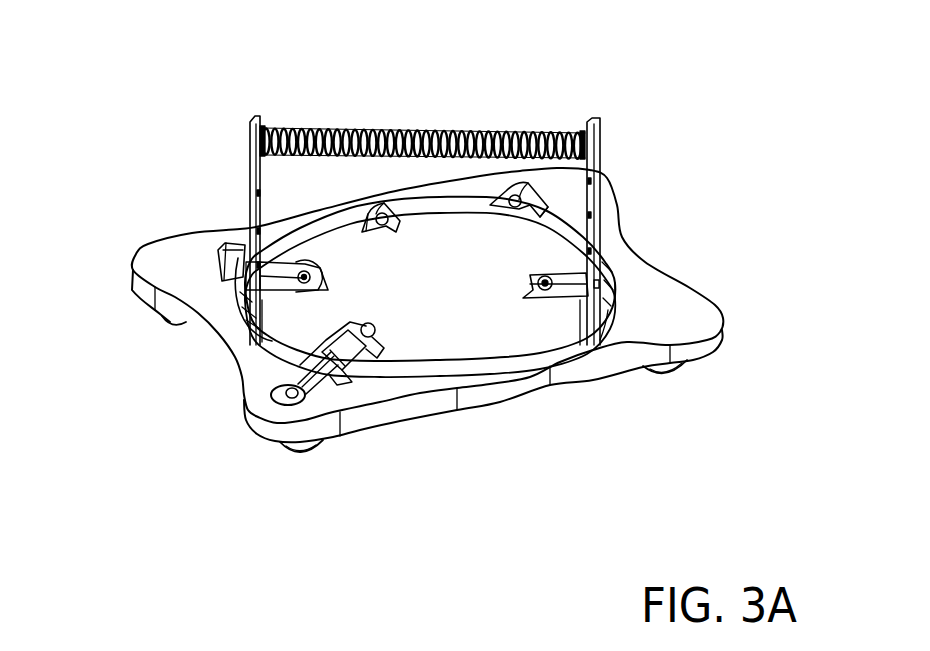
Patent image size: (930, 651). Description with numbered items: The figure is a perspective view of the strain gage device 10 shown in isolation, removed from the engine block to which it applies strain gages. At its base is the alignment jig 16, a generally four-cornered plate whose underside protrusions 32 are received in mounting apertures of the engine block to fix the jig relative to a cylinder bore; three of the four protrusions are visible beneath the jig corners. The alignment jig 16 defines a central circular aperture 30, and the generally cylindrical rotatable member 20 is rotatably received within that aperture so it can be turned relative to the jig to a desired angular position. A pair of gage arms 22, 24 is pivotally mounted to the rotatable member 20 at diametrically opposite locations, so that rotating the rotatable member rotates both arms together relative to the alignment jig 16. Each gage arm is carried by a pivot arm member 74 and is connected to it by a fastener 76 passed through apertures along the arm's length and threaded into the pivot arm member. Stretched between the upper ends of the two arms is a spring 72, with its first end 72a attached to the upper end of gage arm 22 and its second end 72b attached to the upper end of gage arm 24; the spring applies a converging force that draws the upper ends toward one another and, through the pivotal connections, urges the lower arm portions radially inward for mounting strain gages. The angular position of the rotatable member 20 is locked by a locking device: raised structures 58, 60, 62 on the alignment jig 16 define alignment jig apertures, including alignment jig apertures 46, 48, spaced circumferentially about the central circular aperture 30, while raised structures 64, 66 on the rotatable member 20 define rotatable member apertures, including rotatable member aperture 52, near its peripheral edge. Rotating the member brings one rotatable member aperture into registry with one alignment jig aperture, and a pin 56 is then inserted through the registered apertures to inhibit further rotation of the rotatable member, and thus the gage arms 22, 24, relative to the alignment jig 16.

The strain gage device 10 is at (172, 390).
The alignment jig 16 is at (672, 300).
The rotatable member 20 is at (490, 333).
The gage arm 22 is at (250, 178).
The gage arm 24 is at (600, 192).
The central circular aperture 30 is at (433, 377).
The underside protrusions 32 is at (170, 323).
The alignment jig aperture 46 is at (256, 258).
The alignment jig aperture 48 is at (508, 207).
The rotatable member aperture 52 is at (383, 224).
The pin 56 is at (322, 380).
The alignment jig raised structure 58 is at (347, 390).
The alignment jig raised structure 60 is at (226, 263).
The alignment jig raised structure 62 is at (526, 208).
The rotatable member raised structure 64 is at (378, 362).
The rotatable member raised structure 66 is at (362, 208).
The spring 72 is at (440, 133).
The first end of spring 72a is at (266, 130).
The second end of spring 72b is at (573, 135).
The pivot arm member 74 is at (265, 345).
The fastener 76 is at (605, 275).